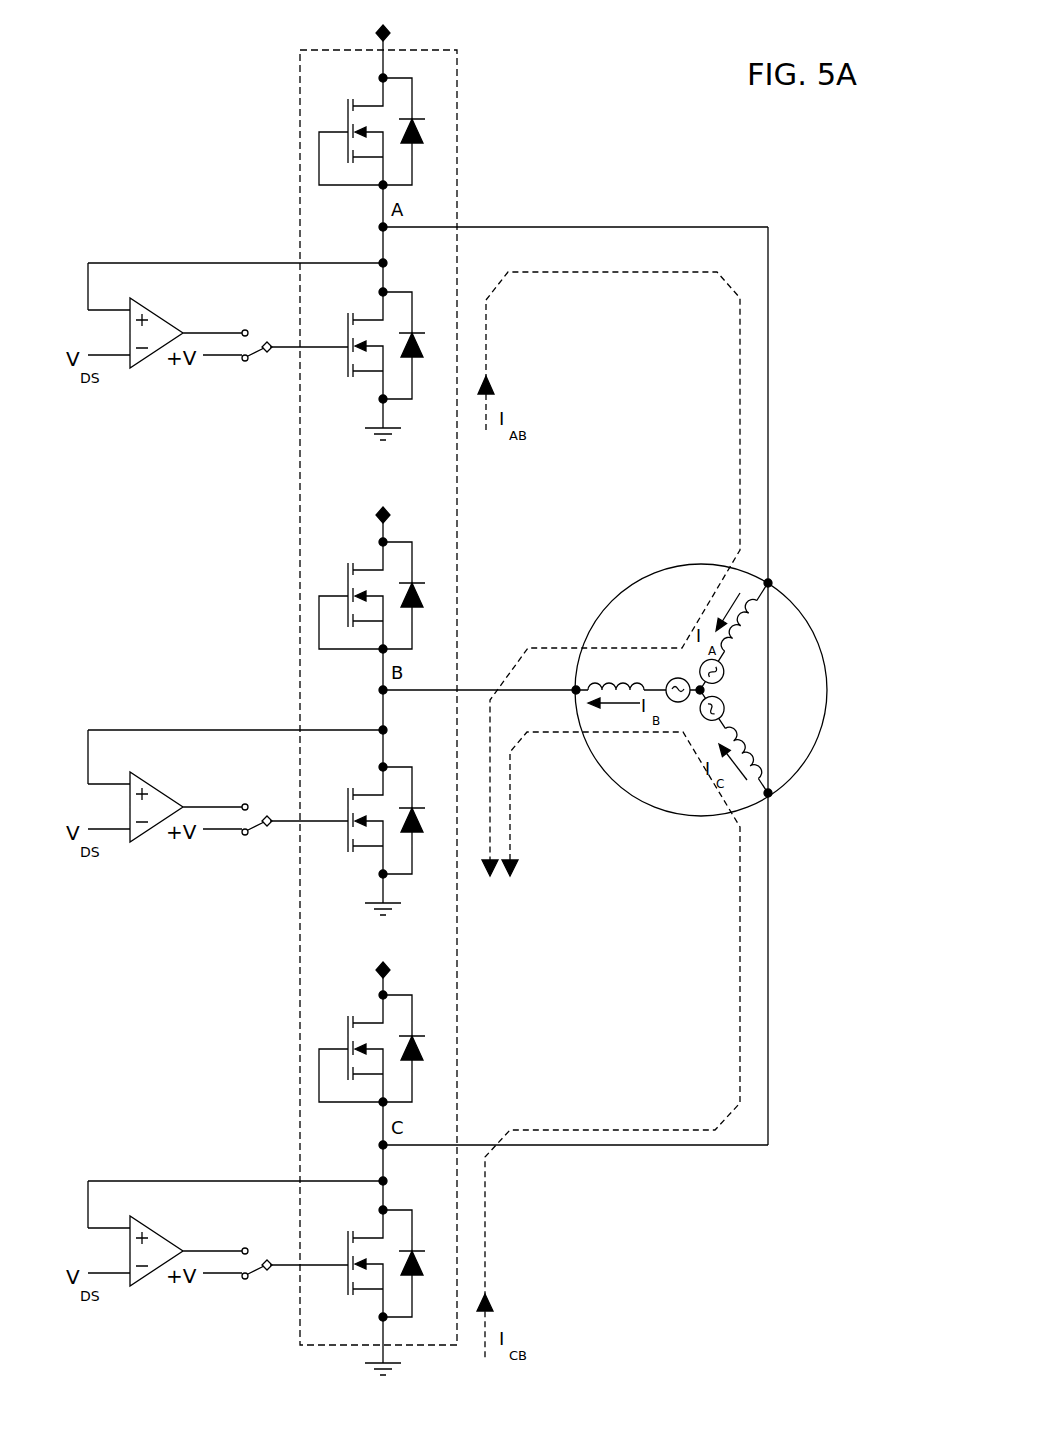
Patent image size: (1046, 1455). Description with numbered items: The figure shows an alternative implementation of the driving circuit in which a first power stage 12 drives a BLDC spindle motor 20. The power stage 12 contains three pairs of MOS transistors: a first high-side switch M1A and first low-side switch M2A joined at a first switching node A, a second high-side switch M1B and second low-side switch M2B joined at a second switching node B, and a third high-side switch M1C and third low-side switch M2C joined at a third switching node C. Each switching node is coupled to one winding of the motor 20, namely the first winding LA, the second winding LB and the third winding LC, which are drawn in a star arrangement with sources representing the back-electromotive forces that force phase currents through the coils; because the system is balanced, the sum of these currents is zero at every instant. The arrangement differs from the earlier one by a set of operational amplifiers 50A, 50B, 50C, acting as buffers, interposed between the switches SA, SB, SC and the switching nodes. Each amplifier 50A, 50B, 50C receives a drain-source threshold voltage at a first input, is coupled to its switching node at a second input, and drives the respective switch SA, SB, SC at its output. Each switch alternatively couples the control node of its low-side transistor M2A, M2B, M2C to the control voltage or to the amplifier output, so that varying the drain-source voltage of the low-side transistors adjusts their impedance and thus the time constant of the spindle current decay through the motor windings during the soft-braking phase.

The first power stage 12 is at (317, 692).
The BLDC motor 20 is at (829, 684).
The operational amplifier 50A is at (150, 362).
The operational amplifier 50B is at (150, 836).
The operational amplifier 50C is at (150, 1280).
The first high-side switch M1A is at (367, 96).
The first low-side switch M2A is at (367, 364).
The second high-side switch M1B is at (367, 569).
The second low-side switch M2B is at (367, 839).
The third high-side switch M1C is at (367, 1023).
The third low-side switch M2C is at (367, 1290).
The first switch SA is at (264, 362).
The second switch SB is at (264, 836).
The third switch SC is at (264, 1280).
The first winding LA is at (734, 636).
The second winding LB is at (638, 680).
The third winding LC is at (736, 742).